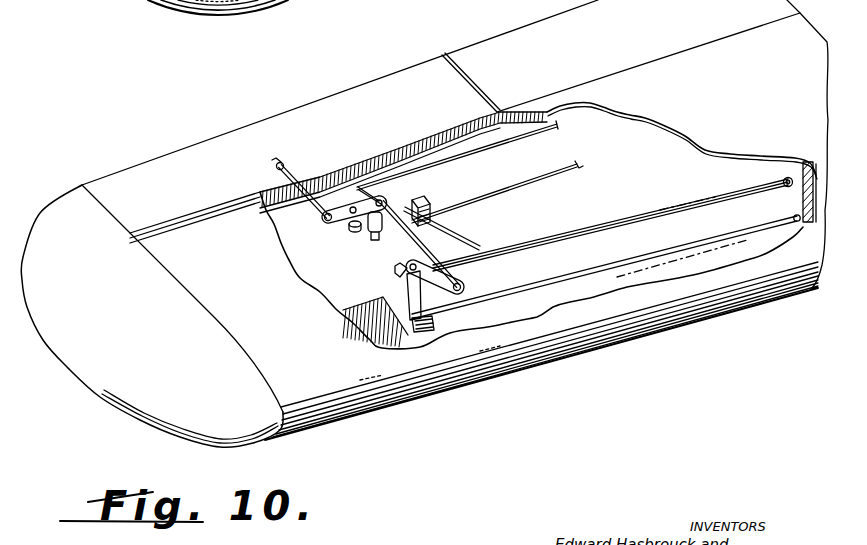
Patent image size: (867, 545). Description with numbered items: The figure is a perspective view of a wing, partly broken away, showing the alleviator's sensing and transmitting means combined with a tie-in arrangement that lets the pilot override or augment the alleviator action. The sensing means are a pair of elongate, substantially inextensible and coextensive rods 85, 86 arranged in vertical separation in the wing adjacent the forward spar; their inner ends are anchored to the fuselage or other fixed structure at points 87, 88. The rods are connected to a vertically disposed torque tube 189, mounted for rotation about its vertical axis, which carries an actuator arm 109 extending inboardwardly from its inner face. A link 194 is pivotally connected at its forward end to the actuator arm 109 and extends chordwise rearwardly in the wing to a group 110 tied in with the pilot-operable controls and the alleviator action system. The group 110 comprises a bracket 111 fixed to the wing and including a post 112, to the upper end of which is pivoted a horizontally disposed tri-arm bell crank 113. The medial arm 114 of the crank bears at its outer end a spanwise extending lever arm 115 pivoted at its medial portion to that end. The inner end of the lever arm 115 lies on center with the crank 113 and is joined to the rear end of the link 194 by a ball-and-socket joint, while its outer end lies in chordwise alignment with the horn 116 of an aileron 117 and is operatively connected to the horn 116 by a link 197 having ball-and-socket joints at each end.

The sensing rod 85 is at (618, 217).
The sensing rod 86 is at (662, 254).
The anchor point 87 is at (789, 178).
The anchor point 88 is at (797, 221).
The actuator arm 109 is at (462, 291).
The group 110 is at (399, 189).
The bracket 111 is at (420, 200).
The post 112 is at (371, 236).
The tri-arm bell crank 113 is at (340, 225).
The medial arm 114 is at (362, 218).
The lever arm 115 is at (330, 215).
The horn 116 is at (278, 165).
The aileron 117 is at (182, 191).
The torque tube 189 is at (384, 337).
The link 194 is at (428, 245).
The link 197 is at (283, 225).